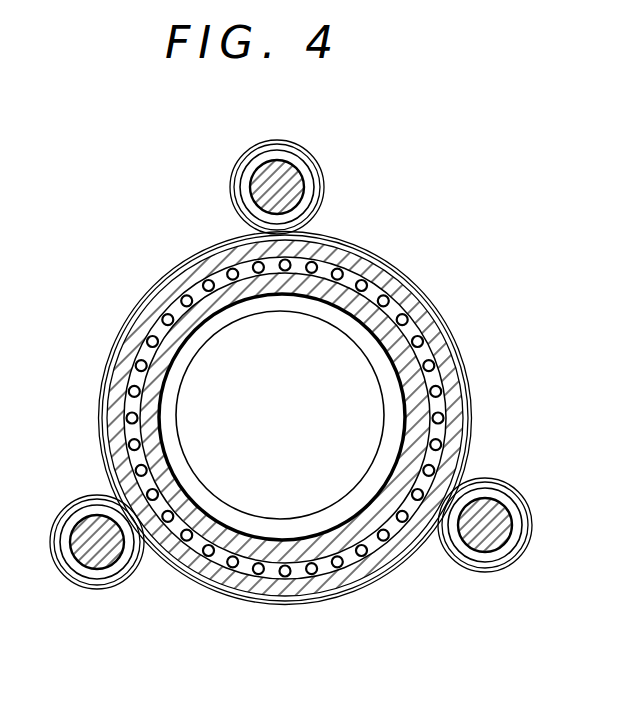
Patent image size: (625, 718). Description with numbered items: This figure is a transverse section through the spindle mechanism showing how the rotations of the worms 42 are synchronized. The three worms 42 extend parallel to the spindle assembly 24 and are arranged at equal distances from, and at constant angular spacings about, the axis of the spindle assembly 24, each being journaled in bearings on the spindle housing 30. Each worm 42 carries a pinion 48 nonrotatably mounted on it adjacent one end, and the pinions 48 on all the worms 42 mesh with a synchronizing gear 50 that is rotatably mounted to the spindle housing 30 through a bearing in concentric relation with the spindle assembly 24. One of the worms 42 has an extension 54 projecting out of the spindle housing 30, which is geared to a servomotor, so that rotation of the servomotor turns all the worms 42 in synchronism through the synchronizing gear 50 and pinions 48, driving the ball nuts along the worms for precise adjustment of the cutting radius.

The spindle assembly 24 is at (303, 423).
The spindle housing 30 is at (180, 320).
The worm 42 is at (292, 173).
The pinion 48 is at (246, 161).
The synchronizing gear 50 is at (473, 420).
The extension 54 is at (405, 320).